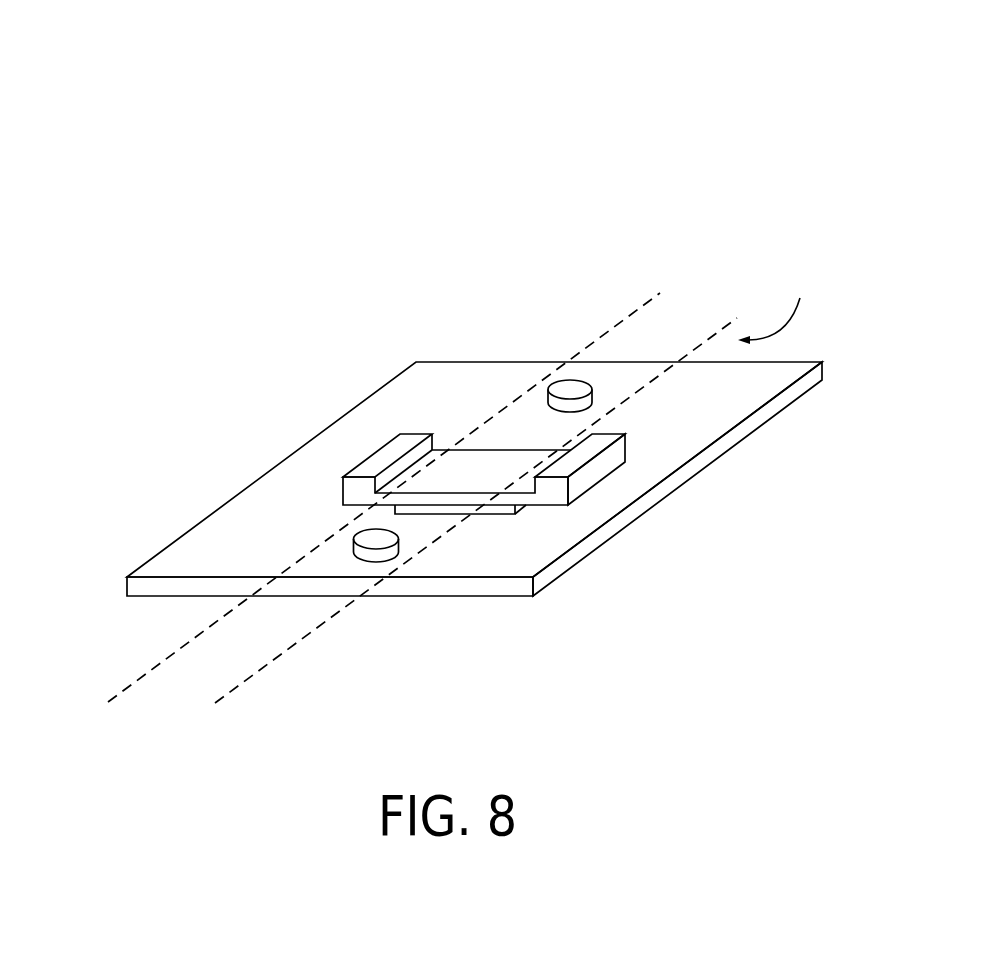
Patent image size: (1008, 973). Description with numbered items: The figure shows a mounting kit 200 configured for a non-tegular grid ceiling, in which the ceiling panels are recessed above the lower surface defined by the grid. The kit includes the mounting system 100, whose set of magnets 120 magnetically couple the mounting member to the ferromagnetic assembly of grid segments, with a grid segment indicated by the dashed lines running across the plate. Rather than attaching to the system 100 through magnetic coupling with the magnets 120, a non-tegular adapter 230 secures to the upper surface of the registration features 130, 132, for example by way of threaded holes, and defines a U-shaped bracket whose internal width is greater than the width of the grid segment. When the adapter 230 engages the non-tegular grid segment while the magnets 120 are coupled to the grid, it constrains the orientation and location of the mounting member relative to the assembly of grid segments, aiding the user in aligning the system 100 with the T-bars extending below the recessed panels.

The mounting system 100 is at (460, 373).
The mounting kit 200 is at (55, 160).
The set of magnets 120 is at (332, 522).
The registration features 130 is at (492, 527).
The detachable registration feature 132 is at (460, 605).
The non-tegular adapter 230 is at (645, 452).